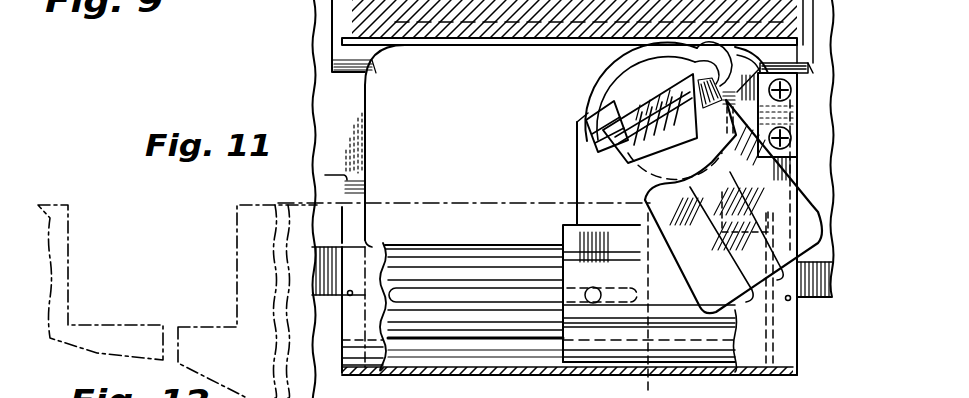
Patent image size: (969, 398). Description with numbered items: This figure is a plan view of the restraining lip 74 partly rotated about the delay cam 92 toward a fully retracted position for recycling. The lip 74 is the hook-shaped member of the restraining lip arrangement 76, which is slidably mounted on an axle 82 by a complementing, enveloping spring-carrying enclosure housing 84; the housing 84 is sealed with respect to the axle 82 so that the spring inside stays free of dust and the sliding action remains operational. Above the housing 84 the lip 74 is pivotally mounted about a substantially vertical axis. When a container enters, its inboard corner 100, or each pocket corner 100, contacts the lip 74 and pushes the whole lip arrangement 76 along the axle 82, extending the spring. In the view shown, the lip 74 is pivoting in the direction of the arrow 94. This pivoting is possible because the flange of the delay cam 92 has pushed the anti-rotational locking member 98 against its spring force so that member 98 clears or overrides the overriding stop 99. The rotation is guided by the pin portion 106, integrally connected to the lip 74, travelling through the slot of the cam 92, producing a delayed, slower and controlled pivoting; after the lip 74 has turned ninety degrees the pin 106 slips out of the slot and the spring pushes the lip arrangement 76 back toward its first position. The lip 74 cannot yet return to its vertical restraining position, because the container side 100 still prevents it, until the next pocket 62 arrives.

The restraining pocket 62 is at (165, 268).
The lip 74 is at (833, 260).
The restraining lip arrangement 76 is at (568, 192).
The axle 82 is at (428, 248).
The spring-carrying enclosure housing 84 is at (693, 350).
The delay cam 92 is at (797, 103).
The arrow 94 is at (854, 170).
The member 98 is at (592, 160).
The overriding stop 99 is at (586, 114).
The corner 100 is at (630, 213).
The pin portion 106 is at (750, 117).